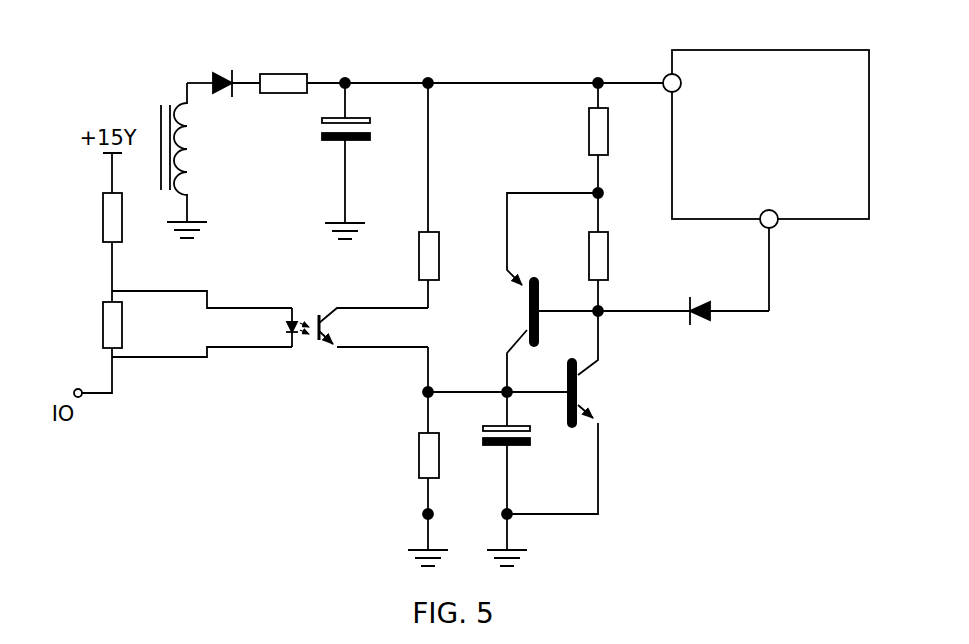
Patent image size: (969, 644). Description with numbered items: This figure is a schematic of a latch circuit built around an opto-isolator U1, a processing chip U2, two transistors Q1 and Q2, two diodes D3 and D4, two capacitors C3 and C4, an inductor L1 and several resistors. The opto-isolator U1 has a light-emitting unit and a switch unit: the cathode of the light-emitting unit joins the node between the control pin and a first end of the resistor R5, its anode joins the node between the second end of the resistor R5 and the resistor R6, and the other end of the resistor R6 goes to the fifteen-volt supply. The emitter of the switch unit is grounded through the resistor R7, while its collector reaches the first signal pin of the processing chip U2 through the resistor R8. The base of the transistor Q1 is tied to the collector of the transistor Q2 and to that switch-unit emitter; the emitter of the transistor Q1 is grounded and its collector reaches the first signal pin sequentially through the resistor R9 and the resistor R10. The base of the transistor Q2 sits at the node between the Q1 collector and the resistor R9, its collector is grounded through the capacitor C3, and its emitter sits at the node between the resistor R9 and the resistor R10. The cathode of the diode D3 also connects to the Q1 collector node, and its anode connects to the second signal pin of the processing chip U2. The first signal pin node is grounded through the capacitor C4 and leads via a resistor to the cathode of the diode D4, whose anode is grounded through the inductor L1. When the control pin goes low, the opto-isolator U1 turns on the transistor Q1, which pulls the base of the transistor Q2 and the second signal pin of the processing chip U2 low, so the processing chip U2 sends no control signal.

The resistor R6 is at (94, 217).
The resistor R5 is at (95, 325).
The opto-isolator U1 is at (357, 344).
The inductor L1 is at (192, 160).
The diode D4 is at (223, 69).
The resistor R8 is at (368, 174).
The capacitor C4 is at (366, 161).
The resistor R10 is at (576, 157).
The resistor R9 is at (621, 271).
The transistor Q2 is at (543, 292).
The transistor Q1 is at (567, 412).
The diode D3 is at (683, 298).
The processing chip U2 is at (766, 163).
The resistor R7 is at (415, 479).
The capacitor C3 is at (512, 479).